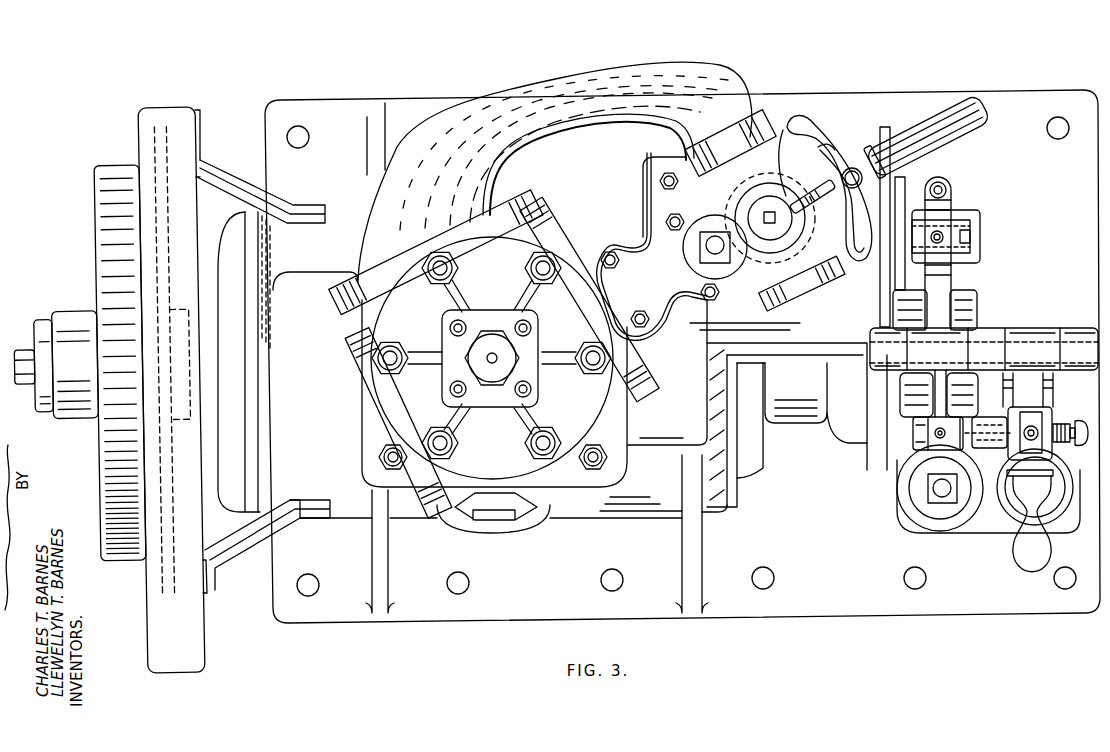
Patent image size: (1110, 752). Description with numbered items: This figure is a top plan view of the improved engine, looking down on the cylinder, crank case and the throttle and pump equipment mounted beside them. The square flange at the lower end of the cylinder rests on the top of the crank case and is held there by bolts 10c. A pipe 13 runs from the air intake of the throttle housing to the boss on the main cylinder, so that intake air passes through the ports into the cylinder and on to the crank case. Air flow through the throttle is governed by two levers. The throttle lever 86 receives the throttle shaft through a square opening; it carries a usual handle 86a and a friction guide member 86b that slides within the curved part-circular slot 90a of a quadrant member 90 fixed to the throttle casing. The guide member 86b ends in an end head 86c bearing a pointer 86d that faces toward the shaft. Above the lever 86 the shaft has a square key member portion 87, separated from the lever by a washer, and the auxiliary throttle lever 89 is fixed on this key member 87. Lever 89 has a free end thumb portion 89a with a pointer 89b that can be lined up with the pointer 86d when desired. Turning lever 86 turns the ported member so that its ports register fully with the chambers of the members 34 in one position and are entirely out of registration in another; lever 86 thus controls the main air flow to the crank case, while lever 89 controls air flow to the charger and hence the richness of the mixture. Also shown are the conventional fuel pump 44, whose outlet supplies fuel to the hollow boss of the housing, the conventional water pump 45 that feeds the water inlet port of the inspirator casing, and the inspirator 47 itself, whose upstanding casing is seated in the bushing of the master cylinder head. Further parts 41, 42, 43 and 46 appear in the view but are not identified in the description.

The bolts 10c is at (365, 442).
The pipe 13 is at (482, 123).
The member 34 is at (803, 285).
The link 41 is at (951, 226).
The slide block 42 is at (943, 308).
The clamp block 43 is at (956, 232).
The fuel pump 44 is at (1055, 423).
The water pump 45 is at (925, 461).
The mounting bracket 46 is at (597, 242).
The inspirator 47 is at (525, 345).
The throttle lever 86 is at (883, 127).
The handle 86a is at (946, 100).
The friction guide member 86b is at (935, 148).
The end head 86c is at (862, 180).
The pointer 86d is at (840, 175).
The square key member portion 87 is at (757, 212).
The auxiliary throttle lever 89 is at (768, 238).
The free end thumb portion 89a is at (785, 197).
The pointer 89b is at (815, 203).
The quadrant member 90 is at (797, 117).
The curved part-circular slot 90a is at (832, 140).